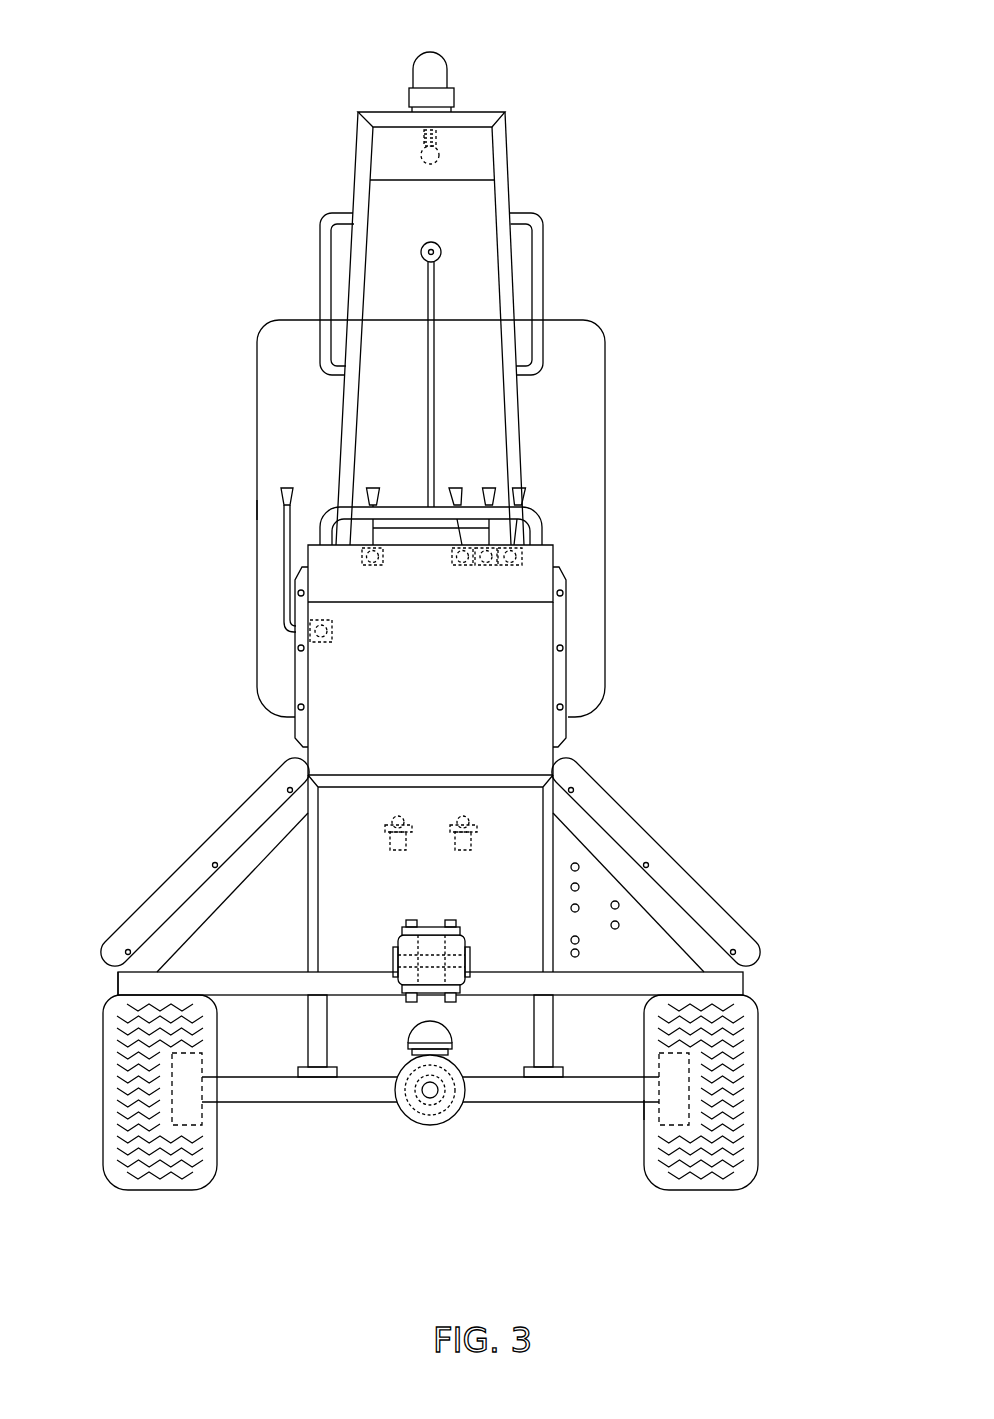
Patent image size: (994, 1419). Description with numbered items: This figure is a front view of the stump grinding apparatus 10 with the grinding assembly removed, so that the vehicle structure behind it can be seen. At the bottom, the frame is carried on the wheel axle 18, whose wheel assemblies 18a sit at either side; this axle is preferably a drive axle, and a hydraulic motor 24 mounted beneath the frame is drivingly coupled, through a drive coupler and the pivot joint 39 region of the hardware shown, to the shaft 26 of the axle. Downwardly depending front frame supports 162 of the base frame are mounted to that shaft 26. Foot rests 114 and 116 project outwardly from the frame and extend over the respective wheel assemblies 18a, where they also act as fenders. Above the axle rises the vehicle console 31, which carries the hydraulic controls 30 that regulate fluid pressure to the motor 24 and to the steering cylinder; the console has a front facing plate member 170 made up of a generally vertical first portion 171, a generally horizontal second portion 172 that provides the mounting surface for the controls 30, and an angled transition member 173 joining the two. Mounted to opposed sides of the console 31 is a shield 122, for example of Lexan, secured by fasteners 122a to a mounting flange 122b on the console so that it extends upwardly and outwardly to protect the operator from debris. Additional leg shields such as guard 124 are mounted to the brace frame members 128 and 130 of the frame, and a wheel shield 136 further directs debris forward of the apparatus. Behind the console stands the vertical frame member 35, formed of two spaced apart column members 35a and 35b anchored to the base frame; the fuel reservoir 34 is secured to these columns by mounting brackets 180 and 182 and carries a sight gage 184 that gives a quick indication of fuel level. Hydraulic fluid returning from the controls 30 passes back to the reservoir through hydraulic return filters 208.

The stump grinding apparatus 10 is at (632, 80).
The wheel axle 18 is at (610, 1145).
The wheel assemblies 18a is at (160, 1193).
The hydraulic motor 24 is at (409, 1140).
The shaft 26 is at (343, 1104).
The hydraulic controls 30 is at (503, 478).
The vehicle console 31 is at (541, 516).
The fuel reservoir 34 is at (365, 199).
The vertical frame member 35 is at (508, 147).
The column member 35a is at (348, 418).
The column member 35b is at (515, 300).
The pivot joint 39 is at (474, 1016).
The foot rest 114 is at (150, 970).
The foot rest 116 is at (700, 960).
The shield 122 is at (590, 338).
The fasteners 122a is at (300, 597).
The mounting flange 122b is at (566, 672).
The leg shield 124 is at (218, 822).
The brace frame member 128 is at (173, 933).
The brace frame member 130 is at (668, 908).
The wheel shield 136 is at (645, 830).
The front frame supports 162 is at (328, 1018).
The front facing plate member 170 is at (292, 677).
The first portion 171 is at (538, 625).
The second portion 172 is at (317, 530).
The transition member 173 is at (541, 572).
The mounting bracket 180 is at (500, 242).
The mounting bracket 182 is at (360, 250).
The sight gage 184 is at (435, 292).
The hydraulic return filters 208 is at (400, 850).